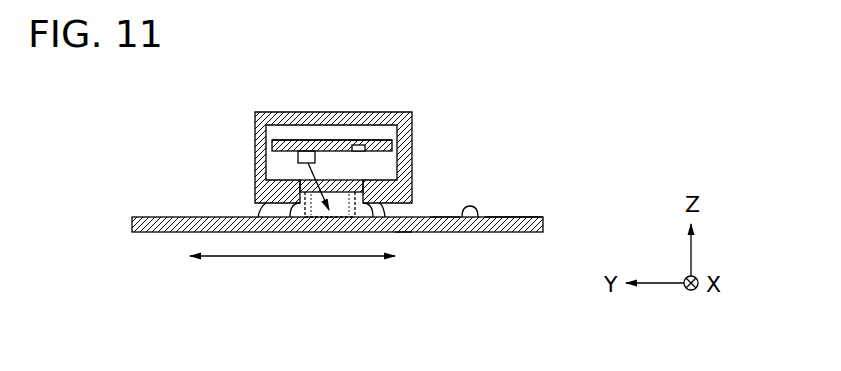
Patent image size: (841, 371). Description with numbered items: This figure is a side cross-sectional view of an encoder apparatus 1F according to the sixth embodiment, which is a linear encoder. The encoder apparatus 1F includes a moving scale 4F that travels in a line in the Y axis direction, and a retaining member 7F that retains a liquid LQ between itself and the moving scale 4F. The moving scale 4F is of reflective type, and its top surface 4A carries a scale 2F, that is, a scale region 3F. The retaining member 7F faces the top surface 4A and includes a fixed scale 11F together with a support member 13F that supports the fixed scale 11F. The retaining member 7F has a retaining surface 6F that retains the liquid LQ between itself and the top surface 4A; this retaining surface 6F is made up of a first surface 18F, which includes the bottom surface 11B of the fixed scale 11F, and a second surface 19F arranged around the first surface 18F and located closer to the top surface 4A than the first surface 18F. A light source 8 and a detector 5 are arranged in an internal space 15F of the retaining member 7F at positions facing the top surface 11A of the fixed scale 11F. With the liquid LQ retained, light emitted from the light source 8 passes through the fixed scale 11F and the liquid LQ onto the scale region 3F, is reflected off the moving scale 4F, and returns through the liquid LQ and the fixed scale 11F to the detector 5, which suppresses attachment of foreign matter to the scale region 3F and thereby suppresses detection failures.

The encoder apparatus 1F is at (376, 196).
The retaining member 7F is at (329, 204).
The support member 13F is at (411, 113).
The internal space 15F is at (290, 135).
The light source 8 is at (323, 140).
The detector 5 is at (366, 149).
The top surface of fixed scale 11A is at (330, 180).
The bottom surface of fixed scale 11B is at (357, 153).
The fixed scale 11F is at (315, 215).
The first surface 18F is at (302, 214).
The second surface 19F is at (262, 216).
The retaining surface 6F is at (287, 281).
The moving scale 4F is at (376, 219).
The top surface of moving scale 4A is at (445, 216).
The scale region 3F is at (497, 216).
The scale 2F is at (472, 216).
The liquid LQ is at (402, 232).